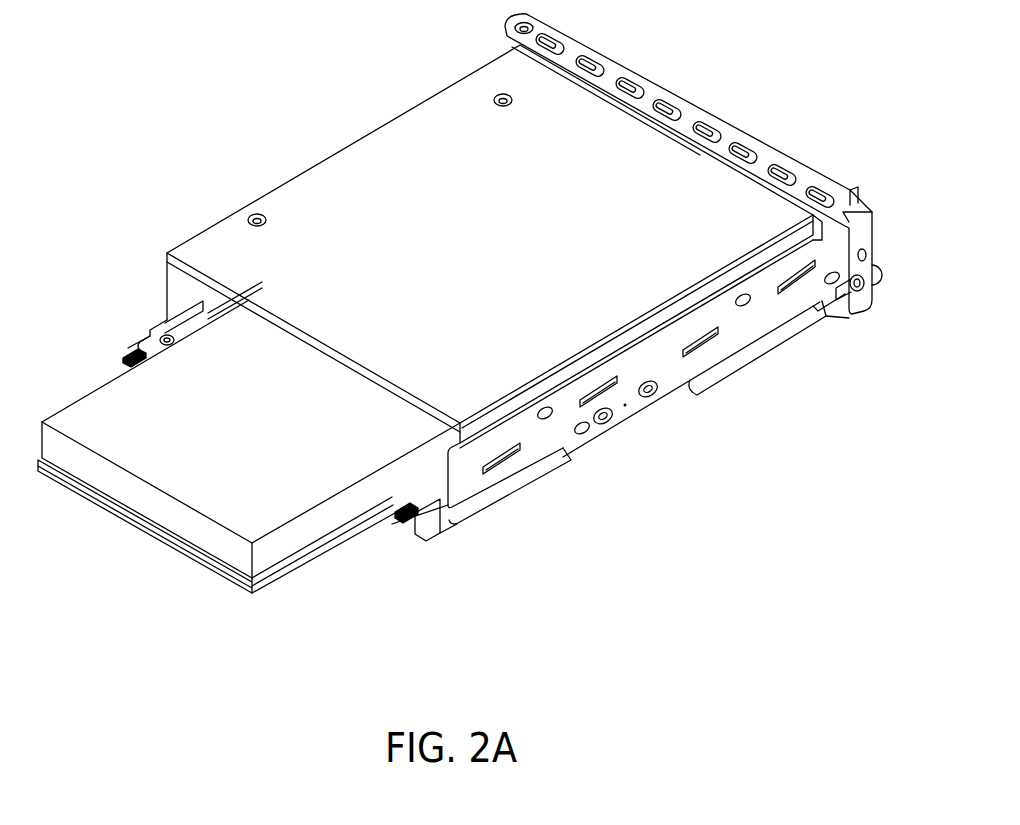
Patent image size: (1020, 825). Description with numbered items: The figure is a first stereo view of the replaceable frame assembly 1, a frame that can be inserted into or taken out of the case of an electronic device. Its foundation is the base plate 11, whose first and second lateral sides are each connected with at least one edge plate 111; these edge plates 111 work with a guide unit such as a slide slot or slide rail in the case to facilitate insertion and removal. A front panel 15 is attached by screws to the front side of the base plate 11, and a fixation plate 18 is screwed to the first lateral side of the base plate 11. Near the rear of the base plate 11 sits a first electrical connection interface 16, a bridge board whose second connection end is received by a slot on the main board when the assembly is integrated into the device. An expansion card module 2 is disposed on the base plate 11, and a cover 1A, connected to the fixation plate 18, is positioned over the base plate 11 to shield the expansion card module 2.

The replaceable frame assembly 1 is at (135, 96).
The cover 1A is at (310, 190).
The expansion card module 2 is at (115, 532).
The base plate 11 is at (422, 532).
The edge plate 111 is at (547, 468).
The front panel 15 is at (765, 157).
The first electrical connection interface 16 is at (135, 342).
The fixation plate 18 is at (672, 390).